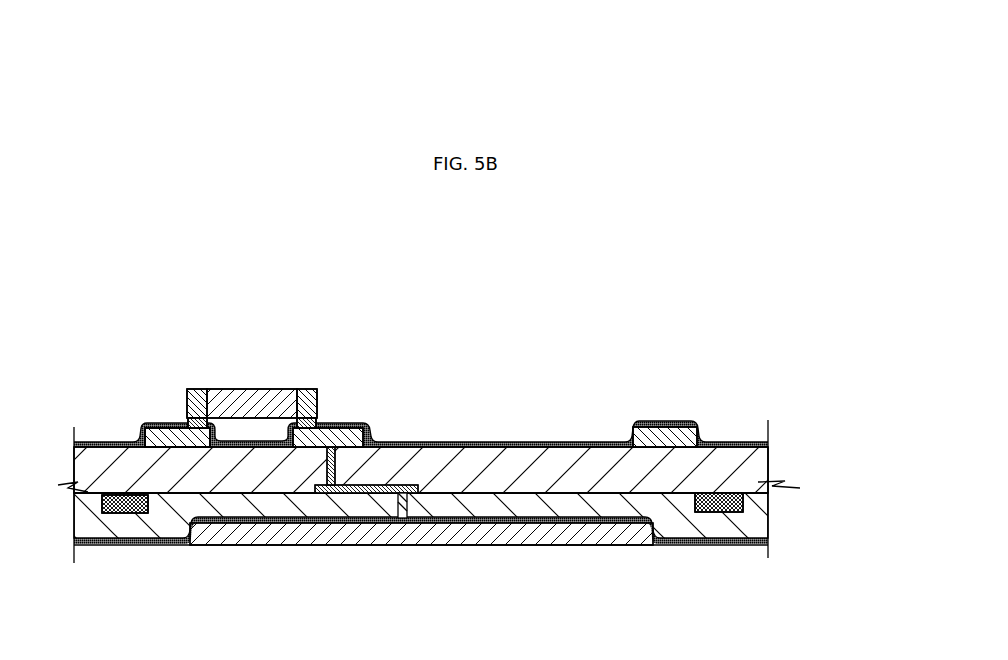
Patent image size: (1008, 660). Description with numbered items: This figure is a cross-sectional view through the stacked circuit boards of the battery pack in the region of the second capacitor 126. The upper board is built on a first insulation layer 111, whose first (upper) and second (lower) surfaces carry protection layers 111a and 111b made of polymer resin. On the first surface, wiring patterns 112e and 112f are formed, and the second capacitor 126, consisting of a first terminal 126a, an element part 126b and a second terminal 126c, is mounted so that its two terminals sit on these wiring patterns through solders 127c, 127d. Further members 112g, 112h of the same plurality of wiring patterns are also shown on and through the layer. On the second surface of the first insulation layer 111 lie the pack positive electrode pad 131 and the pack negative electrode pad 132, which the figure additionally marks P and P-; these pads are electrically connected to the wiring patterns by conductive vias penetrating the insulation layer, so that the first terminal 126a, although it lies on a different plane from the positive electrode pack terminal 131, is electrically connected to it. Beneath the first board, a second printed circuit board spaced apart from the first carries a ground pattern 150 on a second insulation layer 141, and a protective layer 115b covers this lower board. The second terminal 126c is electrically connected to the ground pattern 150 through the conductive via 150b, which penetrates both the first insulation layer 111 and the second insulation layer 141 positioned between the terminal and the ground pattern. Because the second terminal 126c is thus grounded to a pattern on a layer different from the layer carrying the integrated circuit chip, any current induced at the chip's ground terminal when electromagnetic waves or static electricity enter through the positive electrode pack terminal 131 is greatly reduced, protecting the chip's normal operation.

The insulation layer 111 is at (762, 467).
The protection layer 111a is at (711, 438).
The protection layer 111b is at (747, 503).
The wiring pattern 112e is at (134, 437).
The wiring pattern 112f is at (383, 440).
The third electrode pad 112g is at (669, 435).
The via conductor 112h is at (332, 472).
The protective layer 115b is at (742, 543).
The second capacitor 126 is at (252, 354).
The first terminal 126a is at (198, 389).
The element part 126b is at (252, 389).
The second terminal 126c is at (307, 389).
The solder 127c is at (177, 423).
The solder 127d is at (343, 424).
The pack positive electrode pad 131 is at (693, 508).
The pack negative electrode pad 132 is at (103, 513).
The second insulation layer 141 is at (762, 517).
The ground pattern 150 is at (508, 540).
The conductive via 150b is at (354, 483).
The pixel electrode P is at (161, 435).
The negative power line P- is at (139, 513).